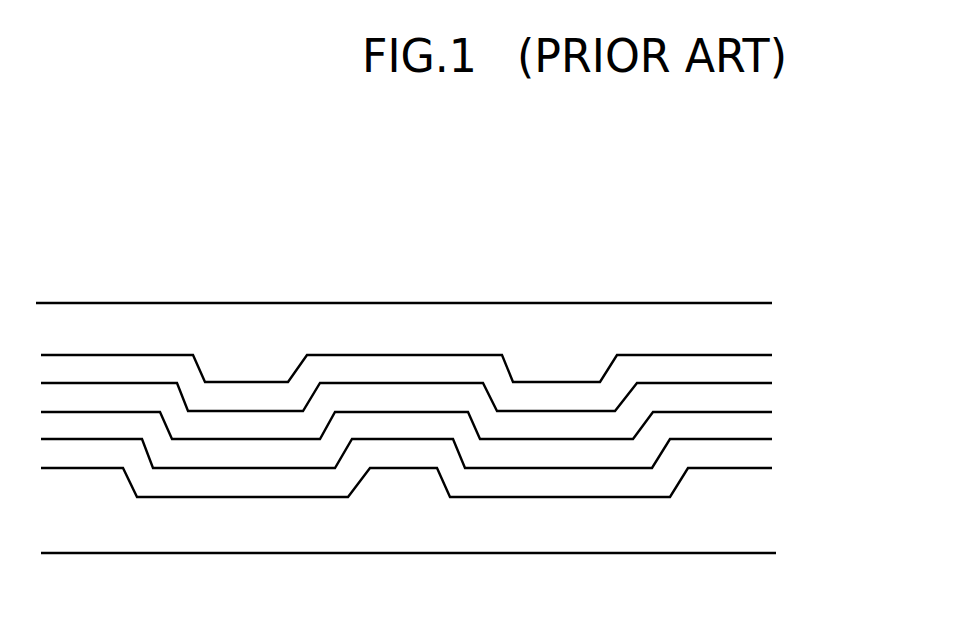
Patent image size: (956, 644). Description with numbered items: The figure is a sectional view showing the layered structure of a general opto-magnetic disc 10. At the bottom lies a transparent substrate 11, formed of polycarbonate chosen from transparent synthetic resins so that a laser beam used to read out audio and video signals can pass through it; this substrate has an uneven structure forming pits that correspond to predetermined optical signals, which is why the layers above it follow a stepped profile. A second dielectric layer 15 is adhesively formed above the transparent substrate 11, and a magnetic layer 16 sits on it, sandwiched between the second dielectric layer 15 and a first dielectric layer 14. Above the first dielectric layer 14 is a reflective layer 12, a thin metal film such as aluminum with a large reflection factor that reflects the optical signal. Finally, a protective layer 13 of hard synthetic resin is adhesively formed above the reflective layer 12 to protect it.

The opto-magnetic disc 10 is at (616, 277).
The transparent substrate 11 is at (755, 516).
The reflective layer 12 is at (765, 371).
The protective layer 13 is at (765, 326).
The first dielectric layer 14 is at (765, 398).
The second dielectric layer 15 is at (765, 452).
The magnetic layer 16 is at (764, 428).